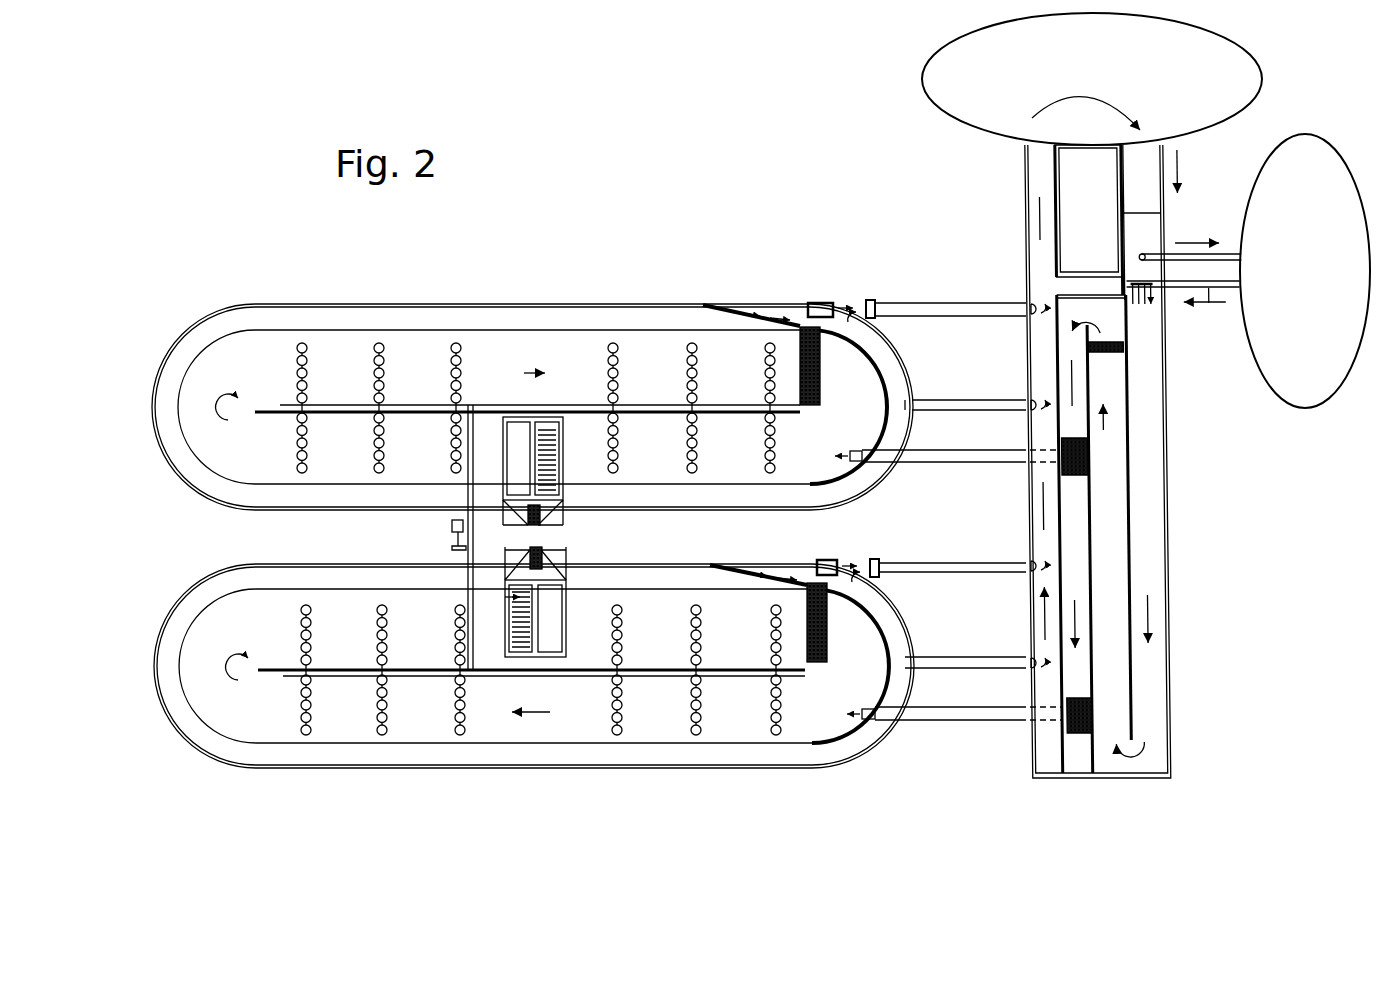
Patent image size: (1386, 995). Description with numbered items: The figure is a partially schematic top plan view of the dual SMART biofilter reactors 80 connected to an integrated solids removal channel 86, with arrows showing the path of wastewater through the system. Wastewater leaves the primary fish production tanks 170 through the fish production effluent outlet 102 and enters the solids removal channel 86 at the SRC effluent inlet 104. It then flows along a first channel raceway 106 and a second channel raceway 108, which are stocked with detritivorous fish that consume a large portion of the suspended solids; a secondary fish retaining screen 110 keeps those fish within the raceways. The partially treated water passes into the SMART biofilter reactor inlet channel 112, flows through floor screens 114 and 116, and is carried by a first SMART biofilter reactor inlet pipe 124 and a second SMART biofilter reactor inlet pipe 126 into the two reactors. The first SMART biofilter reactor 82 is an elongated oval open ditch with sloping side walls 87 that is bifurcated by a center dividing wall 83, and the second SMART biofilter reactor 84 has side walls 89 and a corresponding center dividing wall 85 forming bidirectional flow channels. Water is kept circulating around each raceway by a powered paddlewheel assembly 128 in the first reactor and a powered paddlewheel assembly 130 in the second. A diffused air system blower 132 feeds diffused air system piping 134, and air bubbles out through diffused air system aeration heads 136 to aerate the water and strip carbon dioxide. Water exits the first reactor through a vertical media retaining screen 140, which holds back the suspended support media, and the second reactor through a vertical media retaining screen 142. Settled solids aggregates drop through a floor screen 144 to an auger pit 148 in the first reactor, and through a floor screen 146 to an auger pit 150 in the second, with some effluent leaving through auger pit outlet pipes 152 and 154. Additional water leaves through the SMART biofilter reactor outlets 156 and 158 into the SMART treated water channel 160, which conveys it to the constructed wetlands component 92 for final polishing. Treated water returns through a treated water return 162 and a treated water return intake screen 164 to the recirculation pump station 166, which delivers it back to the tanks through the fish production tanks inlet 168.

The dual SMART biofilter reactors 80 is at (282, 274).
The first SMART biofilter reactor 82 is at (165, 306).
The center dividing wall 83 is at (265, 408).
The second SMART biofilter reactor 84 is at (172, 578).
The lower tank dividing wall 85 is at (258, 675).
The solids removal channel 86 is at (1172, 432).
The sloping side walls 87 is at (600, 320).
The sloping side walls 89 is at (672, 752).
The constructed wetlands component 92 is at (965, 92).
The fish production effluent outlet 102 is at (1148, 287).
The SRC effluent inlet 104 is at (1145, 310).
The first channel raceway 106 is at (1145, 565).
The second channel raceway 108 is at (1108, 710).
The secondary fish retaining screen 110 is at (1105, 352).
The SMART biofilter reactor inlet channel 112 is at (1070, 310).
The floor screen 114 is at (1062, 462).
The floor screen 116 is at (1070, 733).
The first SMART biofilter reactor inlet pipe 124 is at (975, 460).
The second SMART biofilter reactor inlet pipe 126 is at (965, 715).
The powered paddlewheel assembly 128 is at (557, 468).
The powered paddlewheel assembly 130 is at (518, 590).
The diffused air system blower 132 is at (452, 528).
The diffused air system piping 134 is at (517, 597).
The diffused air system aeration heads 136 is at (462, 732).
The vertical media retaining screen 140 is at (890, 397).
The vertical media retaining screen 142 is at (897, 673).
The floor screen 144 is at (800, 340).
The floor screen 146 is at (807, 600).
The auger pit 148 is at (818, 305).
The auger pit 150 is at (826, 563).
The auger pit outlet pipe 152 is at (975, 305).
The auger pit outlet pipe 154 is at (995, 560).
The SMART biofilter reactor outlet pipe 156 is at (1000, 400).
The SMART biofilter reactor outlet 158 is at (1002, 660).
The SMART treated water channel 160 is at (1040, 180).
The treated water return 162 is at (1138, 175).
The treated water return intake screen 164 is at (1133, 213).
The recirculation pump station 166 is at (1140, 243).
The fish production tanks inlet 168 is at (1168, 250).
The primary fish production tanks 170 is at (1262, 400).